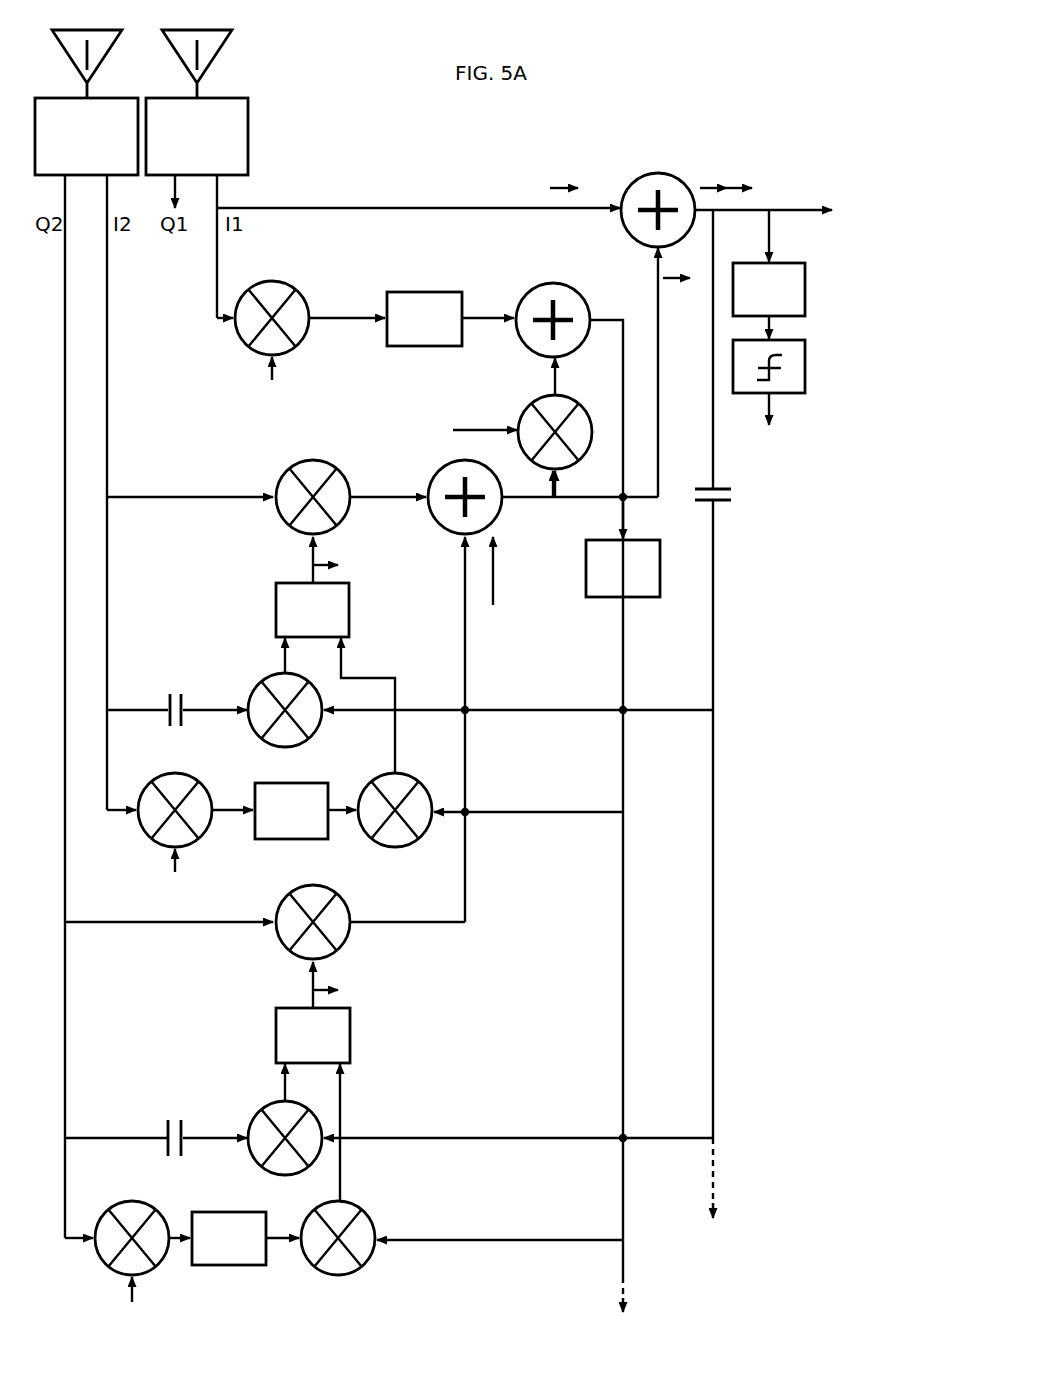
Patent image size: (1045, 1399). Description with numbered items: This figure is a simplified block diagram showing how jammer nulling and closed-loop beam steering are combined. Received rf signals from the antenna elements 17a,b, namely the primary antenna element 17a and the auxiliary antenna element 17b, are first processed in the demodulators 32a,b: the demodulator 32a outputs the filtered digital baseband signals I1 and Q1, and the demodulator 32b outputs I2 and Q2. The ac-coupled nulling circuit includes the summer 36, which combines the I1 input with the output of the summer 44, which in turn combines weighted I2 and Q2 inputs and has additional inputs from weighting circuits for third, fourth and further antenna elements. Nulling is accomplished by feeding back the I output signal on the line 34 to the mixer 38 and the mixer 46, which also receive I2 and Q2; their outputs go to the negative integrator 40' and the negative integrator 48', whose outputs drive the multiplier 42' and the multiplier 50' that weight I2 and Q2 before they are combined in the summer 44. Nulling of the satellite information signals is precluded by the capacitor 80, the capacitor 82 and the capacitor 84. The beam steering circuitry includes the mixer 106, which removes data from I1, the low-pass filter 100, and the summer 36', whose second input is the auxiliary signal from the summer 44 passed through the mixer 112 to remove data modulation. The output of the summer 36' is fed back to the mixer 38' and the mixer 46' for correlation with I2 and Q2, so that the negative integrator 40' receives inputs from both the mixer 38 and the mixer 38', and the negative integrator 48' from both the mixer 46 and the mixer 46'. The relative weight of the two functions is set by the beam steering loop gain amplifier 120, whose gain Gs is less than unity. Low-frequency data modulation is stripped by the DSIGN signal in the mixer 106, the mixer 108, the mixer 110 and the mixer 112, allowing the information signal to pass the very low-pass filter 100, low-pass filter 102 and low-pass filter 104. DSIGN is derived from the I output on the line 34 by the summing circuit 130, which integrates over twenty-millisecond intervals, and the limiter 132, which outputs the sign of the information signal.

The antenna elements 17a,b is at (193, 64).
The primary antenna element 17a is at (87, 64).
The auxiliary antenna element 17b is at (250, 58).
The demodulators 32a,b is at (191, 136).
The demodulator 32a is at (86, 136).
The demodulator 32b is at (258, 135).
The summer 36 is at (651, 309).
The summer 36' is at (561, 772).
The line 34 is at (792, 209).
The summing circuit 130 is at (805, 293).
The limiter 132 is at (805, 370).
The capacitor 80 is at (729, 502).
The mixer 106 is at (272, 280).
The low-pass filter 100 is at (425, 292).
The mixer 112 is at (527, 403).
The multiplier 42' is at (266, 494).
The summer 44 is at (445, 535).
The beam steering loop gain amplifier 120 is at (586, 572).
The negative integrator 40' is at (340, 678).
The mixer 38 is at (448, 699).
The capacitor 82 is at (167, 700).
The mixer 108 is at (200, 778).
The low-pass filter 102 is at (326, 783).
The mixer 38' is at (490, 834).
The multiplier 50' is at (265, 937).
The negative integrator 48' is at (339, 1104).
The mixer 46 is at (448, 1127).
The capacitor 84 is at (167, 1128).
The mixer 110 is at (121, 1205).
The low-pass filter 104 is at (228, 1265).
The mixer 46' is at (462, 1247).